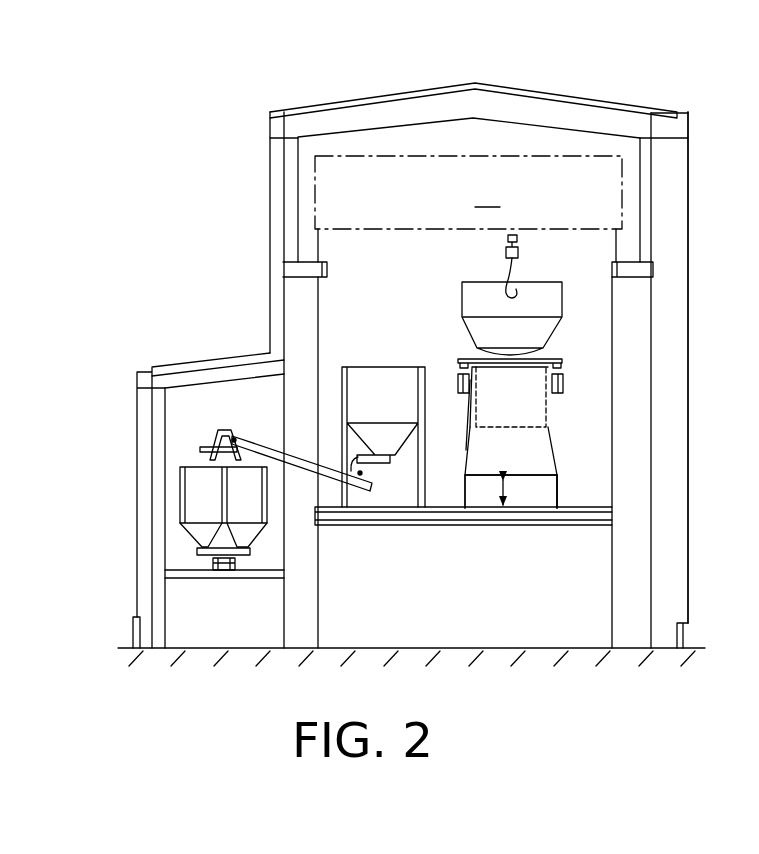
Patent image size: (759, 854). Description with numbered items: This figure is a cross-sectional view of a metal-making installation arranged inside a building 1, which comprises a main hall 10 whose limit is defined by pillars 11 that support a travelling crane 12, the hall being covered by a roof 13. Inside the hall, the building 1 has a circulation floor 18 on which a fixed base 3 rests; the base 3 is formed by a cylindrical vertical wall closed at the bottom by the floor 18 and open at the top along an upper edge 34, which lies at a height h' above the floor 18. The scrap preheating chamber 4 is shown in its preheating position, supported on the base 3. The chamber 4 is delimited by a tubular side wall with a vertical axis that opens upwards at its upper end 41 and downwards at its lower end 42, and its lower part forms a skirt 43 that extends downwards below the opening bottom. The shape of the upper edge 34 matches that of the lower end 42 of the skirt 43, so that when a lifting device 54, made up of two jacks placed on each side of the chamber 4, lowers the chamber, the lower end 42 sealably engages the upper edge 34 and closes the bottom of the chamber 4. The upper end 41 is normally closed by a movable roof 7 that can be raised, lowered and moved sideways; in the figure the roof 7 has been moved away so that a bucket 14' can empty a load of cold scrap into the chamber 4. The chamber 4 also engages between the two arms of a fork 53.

The building 1 is at (245, 213).
The fixed base 3 is at (476, 487).
The preheating chamber 4 is at (533, 421).
The movable roof 7 is at (543, 352).
The main hall 10 is at (330, 322).
The pillars 11 is at (670, 192).
The travelling crane 12 is at (587, 153).
The roof 13 is at (383, 102).
The bucket 14' is at (480, 318).
The circulation floor 18 is at (477, 521).
The upper edge 34 is at (531, 480).
The upper end 41 is at (503, 370).
The lower end 42 is at (532, 482).
The skirt 43 is at (468, 449).
The fork 53 is at (460, 378).
The lifting device 54 is at (562, 378).
The height h' is at (528, 520).